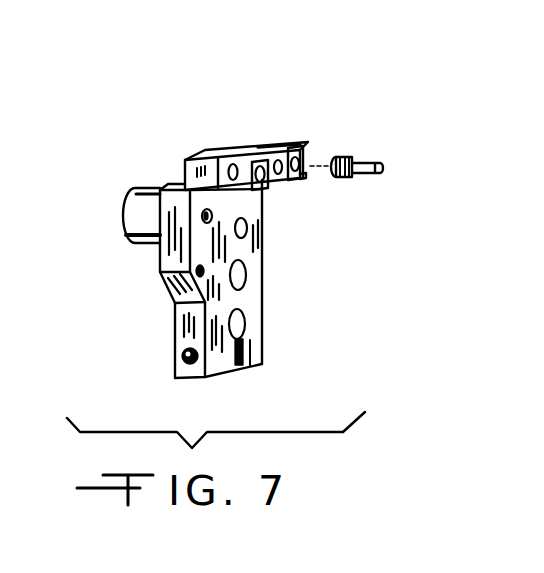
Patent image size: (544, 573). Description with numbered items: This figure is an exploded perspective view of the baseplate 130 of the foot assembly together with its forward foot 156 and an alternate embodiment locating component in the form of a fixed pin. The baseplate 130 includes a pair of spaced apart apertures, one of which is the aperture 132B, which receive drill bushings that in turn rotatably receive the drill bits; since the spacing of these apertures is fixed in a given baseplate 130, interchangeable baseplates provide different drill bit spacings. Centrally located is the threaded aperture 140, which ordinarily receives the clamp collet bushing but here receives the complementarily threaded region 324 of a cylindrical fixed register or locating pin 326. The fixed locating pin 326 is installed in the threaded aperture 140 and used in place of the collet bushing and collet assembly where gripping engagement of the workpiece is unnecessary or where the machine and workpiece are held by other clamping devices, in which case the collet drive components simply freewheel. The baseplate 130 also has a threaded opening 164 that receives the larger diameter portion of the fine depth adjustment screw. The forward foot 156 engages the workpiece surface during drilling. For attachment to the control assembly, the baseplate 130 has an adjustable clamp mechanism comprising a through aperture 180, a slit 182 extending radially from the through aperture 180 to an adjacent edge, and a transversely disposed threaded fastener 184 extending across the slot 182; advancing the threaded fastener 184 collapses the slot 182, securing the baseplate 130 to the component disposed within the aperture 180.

The baseplate 130 is at (256, 344).
The aperture 132B is at (265, 148).
The threaded opening 140 is at (281, 150).
The forward foot 156 is at (303, 148).
The threaded opening 164 is at (212, 213).
The through aperture 180 is at (240, 322).
The slit 182 is at (248, 368).
The threaded fastener 184 is at (182, 358).
The threaded region 324 is at (349, 157).
The fixed locating pin 326 is at (383, 173).